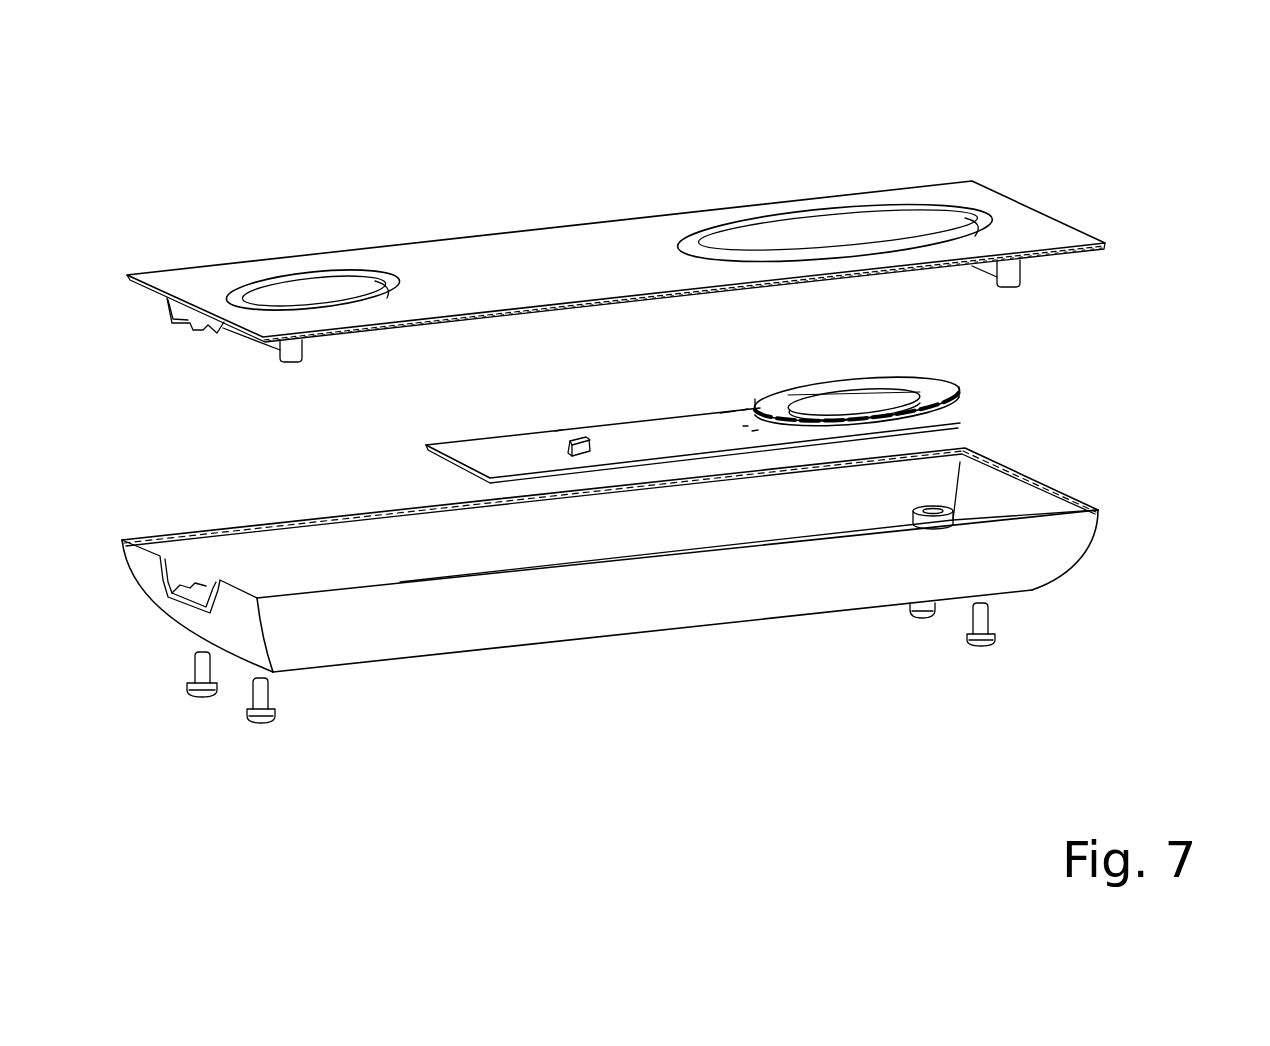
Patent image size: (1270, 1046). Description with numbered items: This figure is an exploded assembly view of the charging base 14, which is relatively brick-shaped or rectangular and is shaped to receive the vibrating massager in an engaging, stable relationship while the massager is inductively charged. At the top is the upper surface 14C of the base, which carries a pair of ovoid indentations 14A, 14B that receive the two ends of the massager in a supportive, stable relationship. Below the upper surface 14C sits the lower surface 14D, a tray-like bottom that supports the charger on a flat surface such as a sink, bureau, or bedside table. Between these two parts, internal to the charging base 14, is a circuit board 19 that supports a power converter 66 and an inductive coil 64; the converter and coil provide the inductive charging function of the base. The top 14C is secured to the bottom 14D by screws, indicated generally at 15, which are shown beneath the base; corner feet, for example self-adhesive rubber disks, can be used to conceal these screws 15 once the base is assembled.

The charging base 14 is at (1062, 104).
The ovoid indentation 14A is at (280, 287).
The ovoid indentation 14B is at (813, 230).
The upper surface 14C is at (562, 233).
The lower surface 14D is at (537, 617).
The screws 15 is at (272, 745).
The circuit board 19 is at (467, 445).
The inductive coil 64 is at (928, 393).
The power converter 66 is at (580, 433).